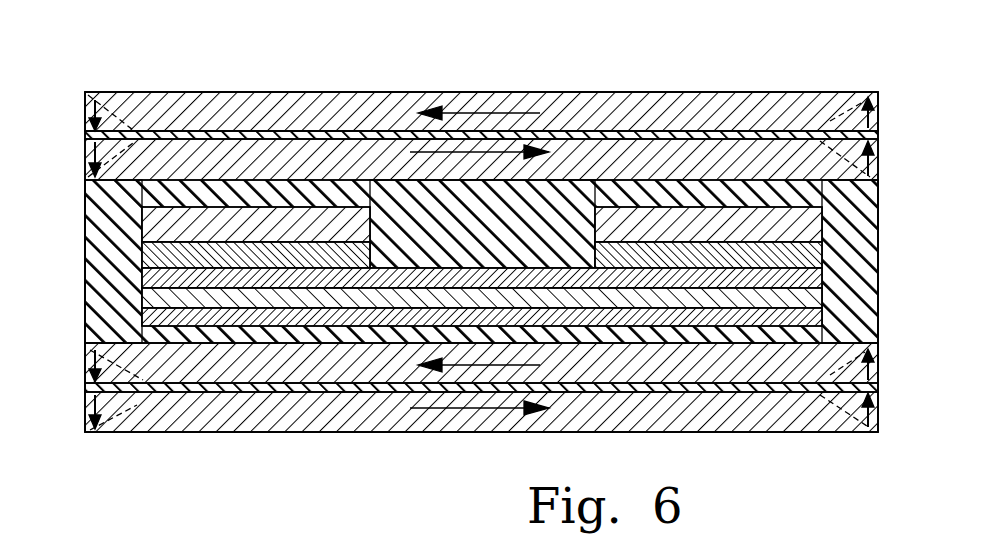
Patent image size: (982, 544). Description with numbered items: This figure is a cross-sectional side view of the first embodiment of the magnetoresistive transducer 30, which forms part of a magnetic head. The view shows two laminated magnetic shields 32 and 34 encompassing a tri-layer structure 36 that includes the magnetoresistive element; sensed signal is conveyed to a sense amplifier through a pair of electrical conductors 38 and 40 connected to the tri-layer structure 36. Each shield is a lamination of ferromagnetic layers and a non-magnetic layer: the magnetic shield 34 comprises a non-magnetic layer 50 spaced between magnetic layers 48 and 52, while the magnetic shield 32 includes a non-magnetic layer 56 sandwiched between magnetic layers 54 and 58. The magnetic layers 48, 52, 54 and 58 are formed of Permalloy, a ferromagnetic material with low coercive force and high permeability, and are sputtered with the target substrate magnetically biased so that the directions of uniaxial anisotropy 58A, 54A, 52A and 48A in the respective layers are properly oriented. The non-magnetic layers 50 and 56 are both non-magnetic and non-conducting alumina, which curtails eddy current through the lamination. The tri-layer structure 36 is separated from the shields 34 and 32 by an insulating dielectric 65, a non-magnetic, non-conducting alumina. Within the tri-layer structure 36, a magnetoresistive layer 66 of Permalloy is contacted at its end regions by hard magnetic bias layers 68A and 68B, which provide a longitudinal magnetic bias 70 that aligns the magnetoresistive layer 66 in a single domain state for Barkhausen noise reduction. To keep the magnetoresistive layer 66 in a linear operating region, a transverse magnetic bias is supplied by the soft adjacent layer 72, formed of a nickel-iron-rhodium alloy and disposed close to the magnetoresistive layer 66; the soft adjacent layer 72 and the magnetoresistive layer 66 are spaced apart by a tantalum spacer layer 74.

The magnetoresistive transducer 30 is at (133, 72).
The magnetic shield 32 is at (221, 446).
The magnetic shield 34 is at (227, 84).
The tri-layer structure 36 is at (313, 340).
The electrical conductor 38 is at (837, 222).
The electrical conductor 40 is at (165, 228).
The magnetic layer 48 is at (773, 412).
The direction of uniaxial anisotropy 48A is at (455, 408).
The non-magnetic layer 50 is at (872, 137).
The magnetic layer 52 is at (718, 380).
The direction of uniaxial anisotropy 52A is at (378, 381).
The magnetic layer 54 is at (642, 150).
The direction of uniaxial anisotropy 54A is at (371, 148).
The non-magnetic layer 56 is at (880, 390).
The magnetic layer 58 is at (690, 108).
The direction of uniaxial anisotropy 58A is at (470, 112).
The insulating dielectric 65 is at (106, 214).
The magnetoresistive layer 66 is at (822, 279).
The hard magnetic bias layer 68A is at (140, 255).
The hard magnetic bias layer 68B is at (822, 255).
The longitudinal magnetic bias 70 is at (515, 277).
The soft adjacent layer 72 is at (835, 333).
The spacer layer 74 is at (822, 298).